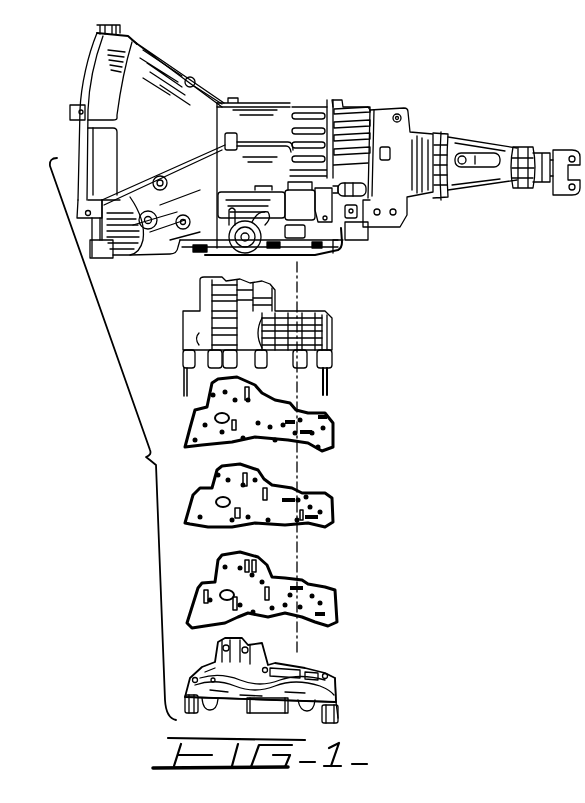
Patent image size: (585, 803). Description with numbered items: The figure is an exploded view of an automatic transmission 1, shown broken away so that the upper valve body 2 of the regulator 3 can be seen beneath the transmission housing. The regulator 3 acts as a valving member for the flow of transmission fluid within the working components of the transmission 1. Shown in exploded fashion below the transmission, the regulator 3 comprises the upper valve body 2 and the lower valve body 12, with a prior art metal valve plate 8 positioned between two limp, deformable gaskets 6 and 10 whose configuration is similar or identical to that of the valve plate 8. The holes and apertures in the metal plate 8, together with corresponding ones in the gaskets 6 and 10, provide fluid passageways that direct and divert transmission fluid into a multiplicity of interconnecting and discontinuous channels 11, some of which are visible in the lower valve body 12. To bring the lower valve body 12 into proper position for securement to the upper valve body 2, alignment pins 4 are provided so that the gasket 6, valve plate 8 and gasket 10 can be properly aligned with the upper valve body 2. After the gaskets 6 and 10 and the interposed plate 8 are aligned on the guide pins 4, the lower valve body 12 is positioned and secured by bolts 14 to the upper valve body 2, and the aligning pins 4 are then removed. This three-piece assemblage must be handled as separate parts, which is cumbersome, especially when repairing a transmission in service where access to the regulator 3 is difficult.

The automatic transmission 1 is at (403, 76).
The upper valve body 2 is at (330, 328).
The regulator 3 is at (406, 436).
The alignment pins 4 is at (184, 388).
The gasket 6 is at (333, 423).
The valve plate 8 is at (333, 503).
The gasket 10 is at (337, 602).
The channels 11 is at (328, 683).
The lower valve body 12 is at (340, 695).
The bolts 14 is at (317, 713).